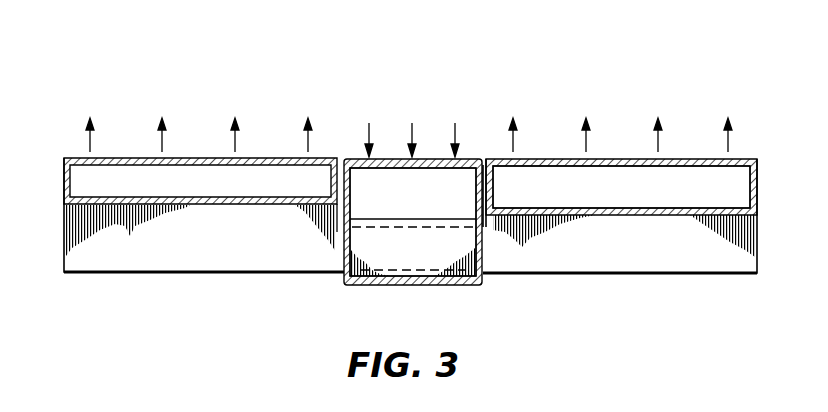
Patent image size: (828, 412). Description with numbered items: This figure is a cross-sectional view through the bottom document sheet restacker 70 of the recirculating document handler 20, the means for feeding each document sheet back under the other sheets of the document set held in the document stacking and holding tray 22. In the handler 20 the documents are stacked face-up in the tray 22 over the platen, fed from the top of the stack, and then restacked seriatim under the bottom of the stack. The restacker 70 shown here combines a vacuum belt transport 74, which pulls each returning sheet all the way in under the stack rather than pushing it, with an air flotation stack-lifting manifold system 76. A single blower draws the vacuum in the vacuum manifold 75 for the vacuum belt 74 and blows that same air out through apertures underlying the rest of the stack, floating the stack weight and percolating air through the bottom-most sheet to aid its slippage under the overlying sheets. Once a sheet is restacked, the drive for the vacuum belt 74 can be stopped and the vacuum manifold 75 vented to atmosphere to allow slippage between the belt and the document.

The recirculating document handler 20 is at (556, 284).
The document stacking and holding tray 22 is at (613, 158).
The bottom document sheet restacker 70 is at (414, 174).
The vacuum belt transport 74 is at (351, 158).
The vacuum manifold 75 is at (392, 180).
The air flotation manifold system 76 is at (678, 179).